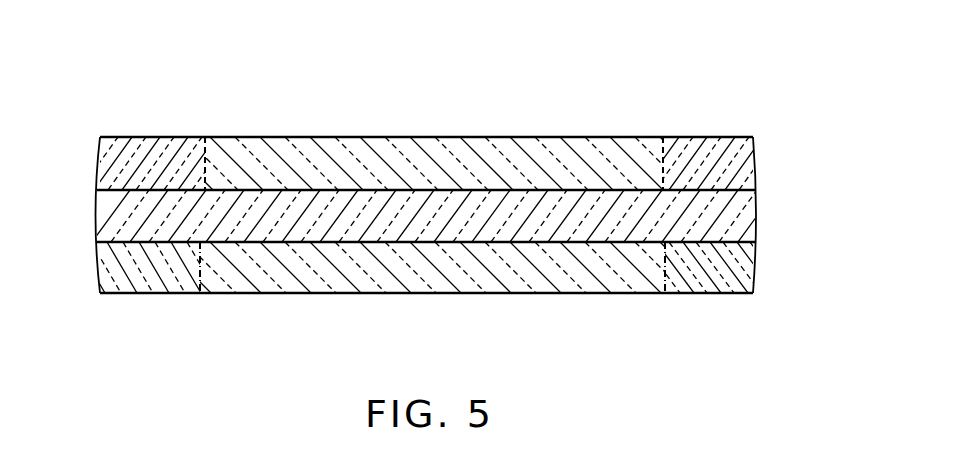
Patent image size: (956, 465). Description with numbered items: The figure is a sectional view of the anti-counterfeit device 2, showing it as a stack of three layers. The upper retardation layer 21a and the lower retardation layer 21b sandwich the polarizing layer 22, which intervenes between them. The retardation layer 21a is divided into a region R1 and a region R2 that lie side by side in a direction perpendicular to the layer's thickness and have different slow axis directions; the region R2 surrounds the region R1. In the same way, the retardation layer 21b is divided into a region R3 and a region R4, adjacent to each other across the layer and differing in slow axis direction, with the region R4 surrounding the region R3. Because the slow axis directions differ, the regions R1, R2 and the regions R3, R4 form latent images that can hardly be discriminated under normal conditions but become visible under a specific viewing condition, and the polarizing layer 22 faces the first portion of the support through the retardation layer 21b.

The anti-counterfeit device 2 is at (74, 92).
The retardation layer 21a is at (760, 170).
The retardation layer 21b is at (768, 274).
The polarizing layer 22 is at (740, 218).
The region R1 is at (440, 152).
The region R2 is at (168, 152).
The region R3 is at (441, 276).
The region R4 is at (168, 277).